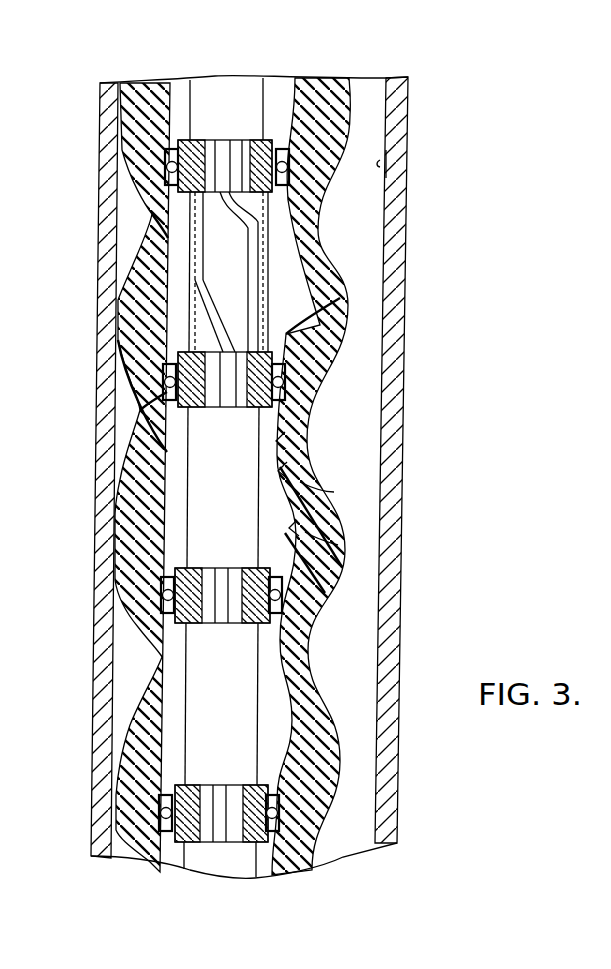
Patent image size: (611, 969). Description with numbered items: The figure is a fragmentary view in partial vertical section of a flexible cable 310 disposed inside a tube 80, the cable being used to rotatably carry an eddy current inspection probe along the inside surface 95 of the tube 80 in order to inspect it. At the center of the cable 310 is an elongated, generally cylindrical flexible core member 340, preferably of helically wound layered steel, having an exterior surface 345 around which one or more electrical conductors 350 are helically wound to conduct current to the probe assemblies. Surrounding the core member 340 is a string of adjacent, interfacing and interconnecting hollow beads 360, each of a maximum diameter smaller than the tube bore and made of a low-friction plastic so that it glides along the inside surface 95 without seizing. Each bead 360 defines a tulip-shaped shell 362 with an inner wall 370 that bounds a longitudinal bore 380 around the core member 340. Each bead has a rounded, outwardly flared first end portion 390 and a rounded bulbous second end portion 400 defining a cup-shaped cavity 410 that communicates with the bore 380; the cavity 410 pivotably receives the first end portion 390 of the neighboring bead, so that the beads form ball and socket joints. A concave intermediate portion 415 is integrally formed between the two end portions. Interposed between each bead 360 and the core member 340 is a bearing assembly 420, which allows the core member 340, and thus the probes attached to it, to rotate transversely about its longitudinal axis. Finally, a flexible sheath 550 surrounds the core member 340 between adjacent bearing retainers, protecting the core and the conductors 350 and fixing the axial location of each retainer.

The tube 80 is at (392, 208).
The inside surface 95 is at (380, 164).
The flexible cable 310 is at (365, 117).
The core member 340 is at (232, 248).
The exterior surface 345 is at (263, 270).
The electrical conductors 350 is at (188, 230).
The hollow beads 360 is at (323, 317).
The tulip-shaped shell 362 is at (320, 360).
The inner wall 370 is at (283, 453).
The longitudinal bore 380 is at (300, 482).
The first end portion 390 is at (320, 495).
The second end portion 400 is at (323, 523).
The cup-shaped cavity 410 is at (343, 558).
The concave intermediate portion 415 is at (103, 477).
The bearing assembly 420 is at (292, 593).
The flexible sheath 550 is at (213, 97).